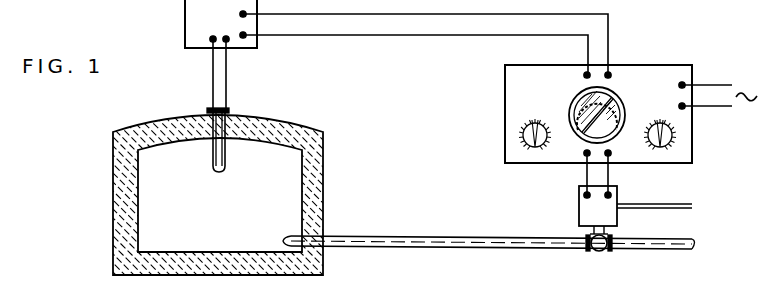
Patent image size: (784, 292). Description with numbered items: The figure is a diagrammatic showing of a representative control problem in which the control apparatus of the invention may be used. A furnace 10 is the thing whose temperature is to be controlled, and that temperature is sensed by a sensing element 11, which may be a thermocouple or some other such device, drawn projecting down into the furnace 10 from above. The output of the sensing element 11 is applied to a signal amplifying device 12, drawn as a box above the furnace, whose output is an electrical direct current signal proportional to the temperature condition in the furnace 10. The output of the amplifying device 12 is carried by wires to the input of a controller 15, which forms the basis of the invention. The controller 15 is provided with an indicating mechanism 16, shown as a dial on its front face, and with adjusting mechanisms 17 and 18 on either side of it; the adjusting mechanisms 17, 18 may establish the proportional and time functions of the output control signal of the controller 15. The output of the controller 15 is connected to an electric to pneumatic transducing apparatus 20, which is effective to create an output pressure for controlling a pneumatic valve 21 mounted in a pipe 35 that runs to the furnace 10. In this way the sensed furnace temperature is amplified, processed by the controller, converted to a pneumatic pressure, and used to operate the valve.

The furnace 10 is at (121, 156).
The sensing element 11 is at (214, 157).
The signal amplifying device 12 is at (199, 19).
The controller 15 is at (641, 82).
The indicating mechanism 16 is at (580, 96).
The adjusting mechanism 17 is at (535, 122).
The adjusting mechanism 18 is at (660, 122).
The electric to pneumatic transducing apparatus 20 is at (579, 208).
The pneumatic valve 21 is at (591, 233).
The gas supply pipe 35 is at (335, 284).